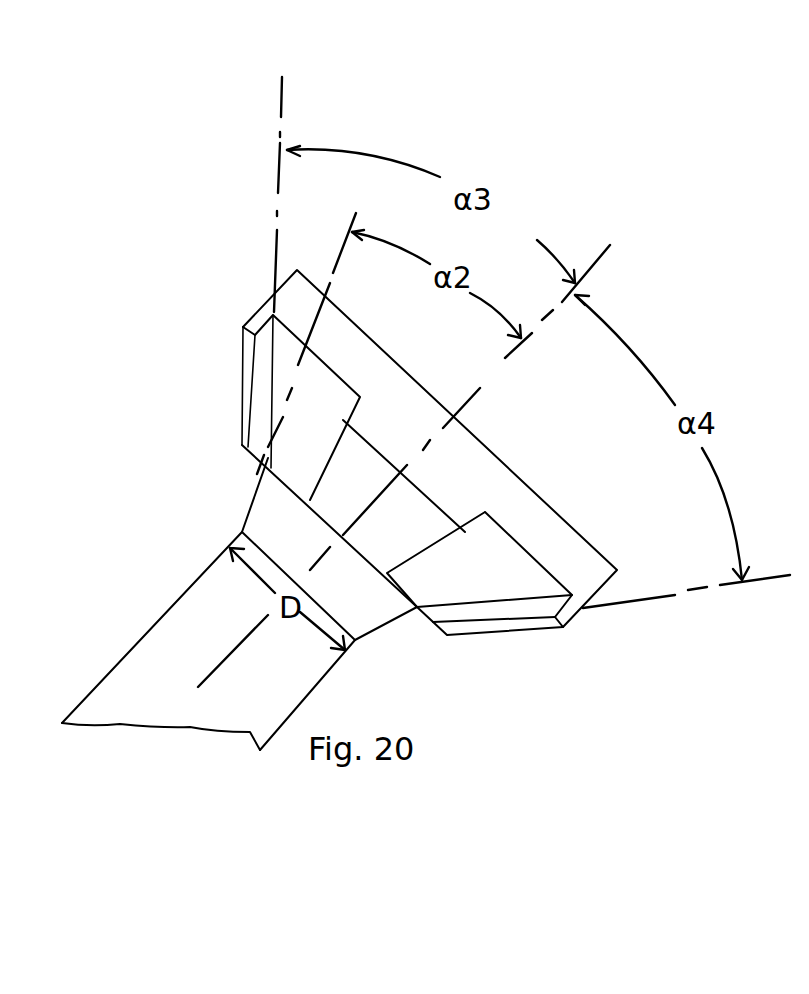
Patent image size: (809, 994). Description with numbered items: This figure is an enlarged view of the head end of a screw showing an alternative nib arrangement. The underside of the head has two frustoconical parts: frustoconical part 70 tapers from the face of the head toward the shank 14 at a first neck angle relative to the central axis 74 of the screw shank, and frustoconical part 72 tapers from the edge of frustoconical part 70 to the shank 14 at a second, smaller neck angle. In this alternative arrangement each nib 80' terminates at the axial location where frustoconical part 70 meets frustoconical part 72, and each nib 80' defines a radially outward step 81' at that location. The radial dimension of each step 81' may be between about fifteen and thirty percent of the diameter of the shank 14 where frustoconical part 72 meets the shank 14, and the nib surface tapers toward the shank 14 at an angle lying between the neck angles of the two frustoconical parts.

The shank 14 is at (165, 640).
The frustoconical part 70 is at (502, 582).
The frustoconical part 72 is at (378, 617).
The central axis 74 is at (603, 255).
The nib 80' is at (404, 466).
The radially outward step 81' is at (221, 411).